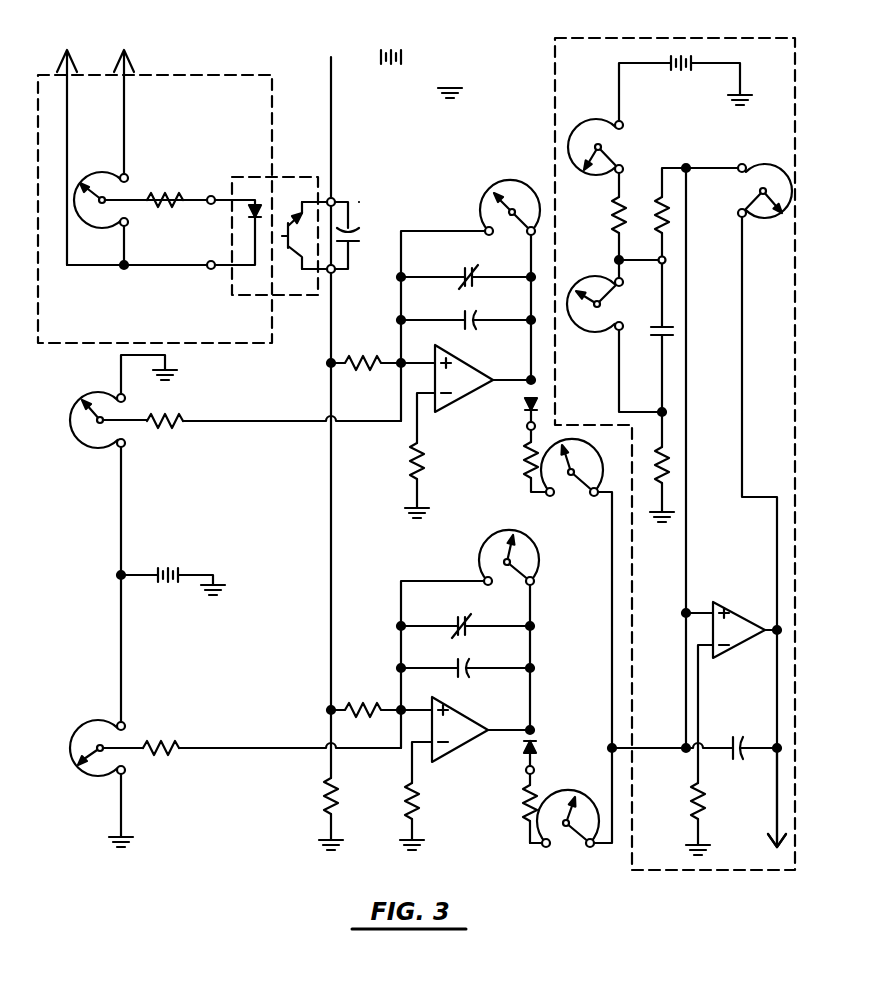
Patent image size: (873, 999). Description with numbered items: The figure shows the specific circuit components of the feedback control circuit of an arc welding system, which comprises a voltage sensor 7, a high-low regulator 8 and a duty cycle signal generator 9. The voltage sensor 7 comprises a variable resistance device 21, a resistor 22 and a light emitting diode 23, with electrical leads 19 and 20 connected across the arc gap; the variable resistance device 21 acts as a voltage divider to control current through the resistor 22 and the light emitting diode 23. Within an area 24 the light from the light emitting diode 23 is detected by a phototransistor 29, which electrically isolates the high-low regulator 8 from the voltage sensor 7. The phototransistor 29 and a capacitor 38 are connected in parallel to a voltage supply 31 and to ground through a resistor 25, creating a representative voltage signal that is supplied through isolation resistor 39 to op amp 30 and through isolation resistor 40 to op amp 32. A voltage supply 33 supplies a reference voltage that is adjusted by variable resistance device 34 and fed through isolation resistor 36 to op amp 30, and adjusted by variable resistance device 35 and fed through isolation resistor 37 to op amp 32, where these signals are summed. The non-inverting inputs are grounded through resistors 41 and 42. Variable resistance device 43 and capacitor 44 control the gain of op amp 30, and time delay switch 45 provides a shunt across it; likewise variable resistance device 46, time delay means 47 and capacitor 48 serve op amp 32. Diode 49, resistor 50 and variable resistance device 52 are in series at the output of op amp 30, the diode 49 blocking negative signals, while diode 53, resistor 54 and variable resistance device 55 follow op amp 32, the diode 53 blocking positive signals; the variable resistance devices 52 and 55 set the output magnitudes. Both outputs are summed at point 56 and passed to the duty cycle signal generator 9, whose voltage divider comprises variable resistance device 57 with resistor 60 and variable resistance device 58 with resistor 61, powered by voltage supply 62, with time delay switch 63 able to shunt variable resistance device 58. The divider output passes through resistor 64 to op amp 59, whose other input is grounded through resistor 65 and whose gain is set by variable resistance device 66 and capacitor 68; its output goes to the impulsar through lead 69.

The voltage sensor 7 is at (195, 66).
The high-low regulator 8 is at (203, 815).
The duty cycle signal generator 9 is at (709, 886).
The electrical lead 19 is at (72, 110).
The electrical lead 20 is at (125, 115).
The variable resistance device 21 is at (77, 224).
The resistor 22 is at (165, 192).
The light emitting diode 23 is at (257, 200).
The area 24 is at (232, 296).
The resistor 25 is at (318, 793).
The phototransistor 29 is at (283, 240).
The op amp 30 is at (474, 396).
The voltage supply 31 is at (383, 66).
The op amp 32 is at (450, 755).
The voltage supply 33 is at (168, 562).
The variable resistance device 34 is at (77, 448).
The variable resistance device 35 is at (73, 725).
The isolation resistor 36 is at (168, 430).
The isolation resistor 37 is at (162, 738).
The capacitor 38 is at (354, 228).
The isolation resistor 39 is at (366, 355).
The isolation resistor 40 is at (358, 700).
The resistor 41 is at (410, 465).
The resistor 42 is at (404, 798).
The variable resistance device 43 is at (535, 182).
The capacitor 44 is at (461, 313).
The time delay switch 45 is at (461, 270).
The variable resistance device 46 is at (481, 552).
The time delay means 47 is at (456, 620).
The capacitor 48 is at (456, 663).
The diode 49 is at (537, 398).
The resistor 50 is at (521, 463).
The variable resistance device 52 is at (604, 440).
The diode 53 is at (534, 737).
The resistor 54 is at (520, 813).
The variable resistance device 55 is at (553, 787).
The point 56 is at (614, 745).
The variable resistance device 57 is at (603, 113).
The variable resistance device 58 is at (573, 277).
The op amp 59 is at (740, 605).
The resistor 60 is at (608, 205).
The resistor 61 is at (670, 457).
The voltage supply 62 is at (680, 78).
The time delay switch 63 is at (664, 322).
The resistor 64 is at (673, 212).
The resistor 65 is at (690, 803).
The variable resistance device 66 is at (787, 228).
The capacitor 68 is at (727, 737).
The lead 69 is at (773, 803).